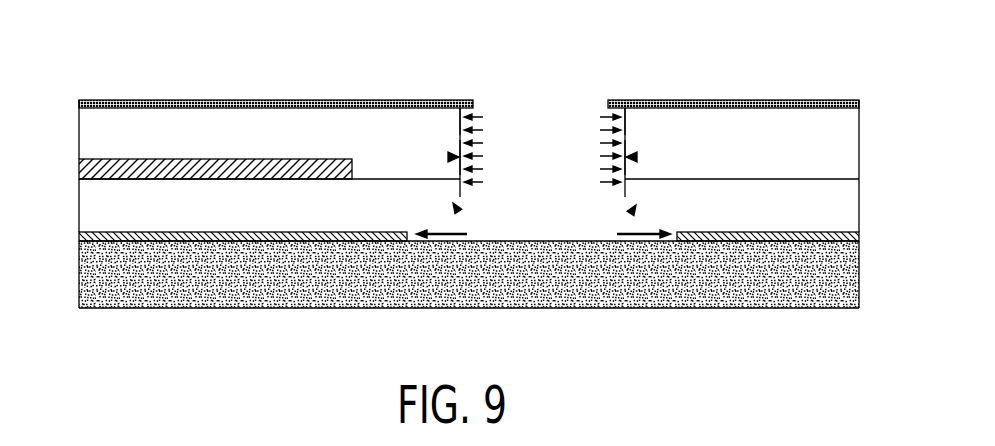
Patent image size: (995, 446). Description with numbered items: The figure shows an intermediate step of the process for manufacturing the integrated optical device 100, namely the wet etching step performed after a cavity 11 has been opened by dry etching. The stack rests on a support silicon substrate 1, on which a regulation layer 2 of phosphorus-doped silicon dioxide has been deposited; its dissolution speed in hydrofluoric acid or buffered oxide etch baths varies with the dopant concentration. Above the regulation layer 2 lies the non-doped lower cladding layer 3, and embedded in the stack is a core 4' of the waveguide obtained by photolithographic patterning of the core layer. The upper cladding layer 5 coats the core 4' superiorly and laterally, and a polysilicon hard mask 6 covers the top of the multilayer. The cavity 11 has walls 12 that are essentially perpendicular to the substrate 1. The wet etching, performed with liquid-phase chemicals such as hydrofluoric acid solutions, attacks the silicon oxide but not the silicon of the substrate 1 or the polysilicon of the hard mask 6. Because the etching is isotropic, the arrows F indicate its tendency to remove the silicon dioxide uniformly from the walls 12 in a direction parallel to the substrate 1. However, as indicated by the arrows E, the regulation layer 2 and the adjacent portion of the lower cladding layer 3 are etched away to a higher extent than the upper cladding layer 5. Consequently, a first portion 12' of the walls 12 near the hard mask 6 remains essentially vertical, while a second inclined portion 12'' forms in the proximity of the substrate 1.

The support silicon substrate 1 is at (840, 282).
The regulation layer 2 is at (855, 238).
The lower cladding layer 3 is at (90, 214).
The core 4' is at (190, 108).
The upper cladding layer 5 is at (92, 128).
The hard mask 6 is at (745, 103).
The cavity 11 is at (552, 169).
The walls 12 is at (526, 106).
The first portion of the walls 12' is at (536, 86).
The second inclined portion of the walls 12'' is at (544, 283).
The arrows indicating isotropic etching F is at (483, 128).
The arrows indicating enhanced etching E is at (452, 253).
The integrated optical device 100 is at (160, 381).